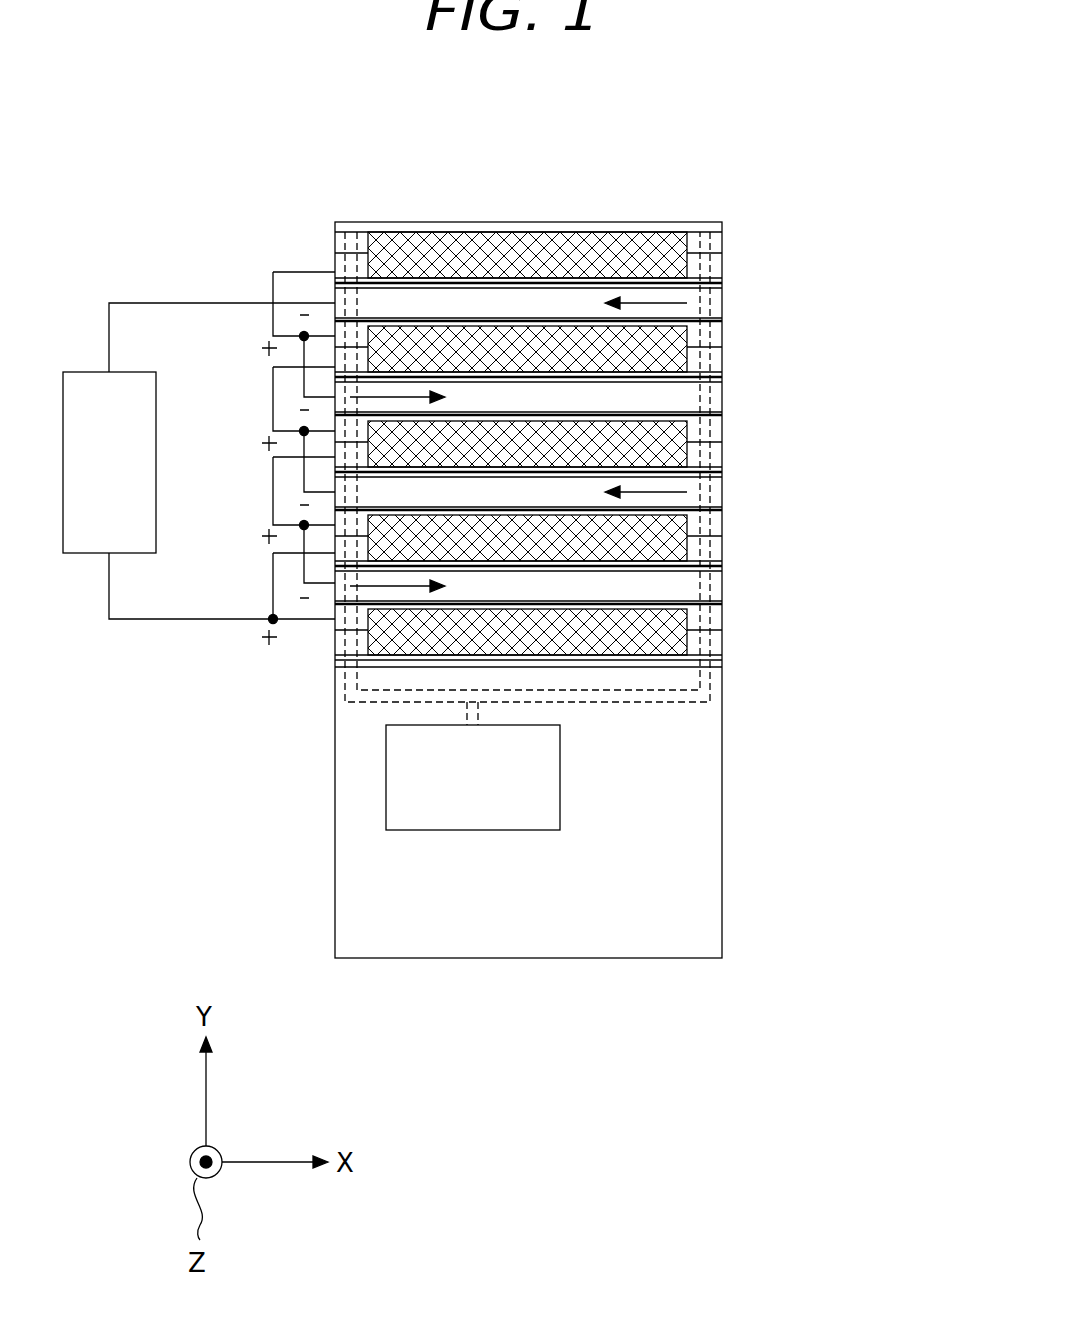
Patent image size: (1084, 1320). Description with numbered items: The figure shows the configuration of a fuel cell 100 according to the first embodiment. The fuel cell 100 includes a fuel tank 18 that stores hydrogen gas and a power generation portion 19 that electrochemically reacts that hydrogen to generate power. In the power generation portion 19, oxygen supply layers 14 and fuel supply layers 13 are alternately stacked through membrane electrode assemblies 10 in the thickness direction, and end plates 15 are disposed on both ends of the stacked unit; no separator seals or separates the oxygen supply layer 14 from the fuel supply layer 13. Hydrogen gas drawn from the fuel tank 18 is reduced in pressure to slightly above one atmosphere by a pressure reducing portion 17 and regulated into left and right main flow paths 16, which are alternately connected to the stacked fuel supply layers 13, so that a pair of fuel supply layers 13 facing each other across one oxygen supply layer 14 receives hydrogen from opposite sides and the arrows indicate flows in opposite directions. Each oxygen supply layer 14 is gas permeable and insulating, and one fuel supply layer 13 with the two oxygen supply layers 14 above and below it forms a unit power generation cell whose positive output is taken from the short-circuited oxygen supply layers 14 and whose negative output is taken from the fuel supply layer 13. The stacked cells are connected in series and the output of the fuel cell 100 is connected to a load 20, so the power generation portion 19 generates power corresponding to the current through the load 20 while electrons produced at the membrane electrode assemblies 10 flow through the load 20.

The fuel cell 100 is at (570, 154).
The membrane electrode assembly 10 is at (723, 283).
The fuel supply layer 13 is at (723, 300).
The oxygen supply layer 14 is at (723, 252).
The end plate 15 is at (723, 224).
The main flow path 16 is at (723, 690).
The pressure reducing portion 17 is at (561, 750).
The fuel tank 18 is at (723, 832).
The power generation portion 19 is at (637, 442).
The load 20 is at (157, 388).